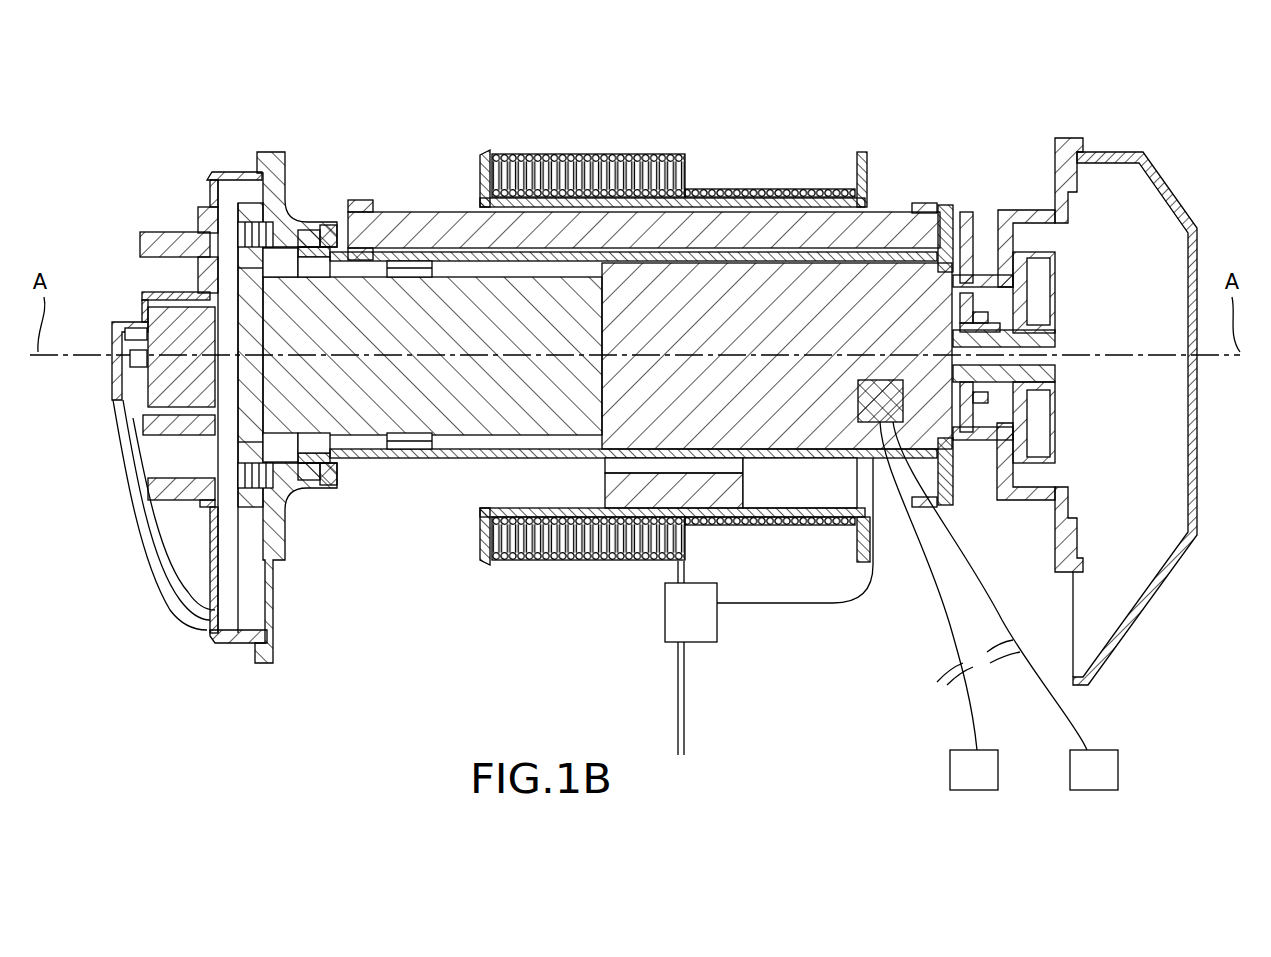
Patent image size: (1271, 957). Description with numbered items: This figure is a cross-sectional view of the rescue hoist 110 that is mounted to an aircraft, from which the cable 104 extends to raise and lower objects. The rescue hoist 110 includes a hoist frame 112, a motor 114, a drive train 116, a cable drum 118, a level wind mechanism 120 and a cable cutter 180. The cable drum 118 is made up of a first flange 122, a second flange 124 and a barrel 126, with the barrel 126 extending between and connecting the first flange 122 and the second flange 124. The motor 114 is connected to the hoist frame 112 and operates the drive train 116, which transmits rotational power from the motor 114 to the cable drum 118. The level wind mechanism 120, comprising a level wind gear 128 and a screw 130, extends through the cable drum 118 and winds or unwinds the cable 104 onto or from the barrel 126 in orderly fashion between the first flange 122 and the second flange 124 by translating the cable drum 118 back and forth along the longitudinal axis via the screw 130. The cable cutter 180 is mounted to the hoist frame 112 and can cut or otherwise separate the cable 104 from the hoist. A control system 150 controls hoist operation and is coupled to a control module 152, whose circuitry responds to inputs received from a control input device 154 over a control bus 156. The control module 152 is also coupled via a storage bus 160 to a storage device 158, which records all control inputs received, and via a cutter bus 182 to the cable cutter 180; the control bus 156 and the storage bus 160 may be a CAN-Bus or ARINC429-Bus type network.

The cable 104 is at (671, 155).
The rescue hoist 110 is at (203, 113).
The hoist frame 112 is at (278, 150).
The motor 114 is at (932, 428).
The drive train 116 is at (463, 405).
The cable drum 118 is at (802, 160).
The level wind mechanism 120 is at (900, 200).
The first flange 122 is at (481, 172).
The second flange 124 is at (864, 152).
The barrel 126 is at (757, 195).
The level wind gear 128 is at (972, 225).
The screw 130 is at (941, 210).
The control system 150 is at (913, 715).
The control module 152 is at (905, 400).
The control input device 154 is at (985, 792).
The control bus 156 is at (947, 641).
The storage device 158 is at (1096, 792).
The storage bus 160 is at (1027, 627).
The cable cutter 180 is at (673, 633).
The cutter bus 182 is at (788, 605).